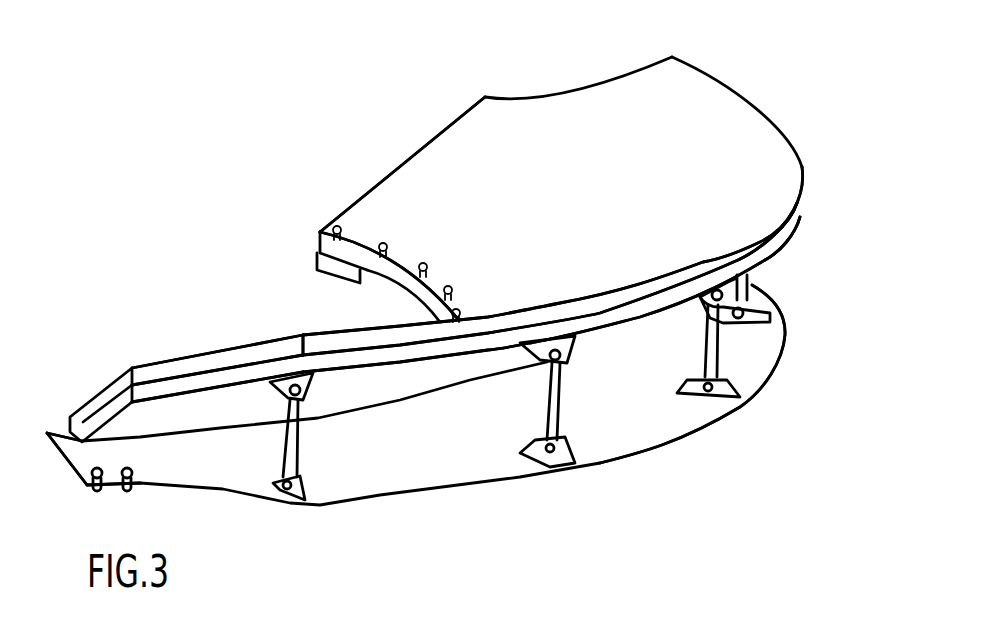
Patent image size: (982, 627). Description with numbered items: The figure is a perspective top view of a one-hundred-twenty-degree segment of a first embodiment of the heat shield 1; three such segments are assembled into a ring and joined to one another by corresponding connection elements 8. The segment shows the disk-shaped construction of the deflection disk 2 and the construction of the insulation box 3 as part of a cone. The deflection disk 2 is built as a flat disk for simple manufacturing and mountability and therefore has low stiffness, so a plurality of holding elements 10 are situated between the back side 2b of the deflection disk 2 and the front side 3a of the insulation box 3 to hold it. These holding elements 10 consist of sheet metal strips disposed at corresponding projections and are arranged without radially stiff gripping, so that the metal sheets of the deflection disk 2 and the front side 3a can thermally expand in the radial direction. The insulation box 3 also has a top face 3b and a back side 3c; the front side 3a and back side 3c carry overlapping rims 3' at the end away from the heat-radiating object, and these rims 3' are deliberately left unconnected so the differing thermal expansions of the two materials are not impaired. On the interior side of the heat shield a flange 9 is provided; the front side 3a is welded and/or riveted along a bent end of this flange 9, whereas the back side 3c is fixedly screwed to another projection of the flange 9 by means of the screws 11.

The apparatus / cutting-edge arrangement 1 is at (760, 78).
The deflection disk 2 is at (433, 497).
The back side of the deflection disk 2b is at (630, 443).
The insulation box 3 is at (436, 263).
The front side of the insulation box 3a is at (228, 383).
The top face of support member 3b is at (195, 368).
The back side of the insulation box 3c is at (553, 118).
The overlapping rims 3' is at (802, 220).
The connection elements 8 is at (55, 432).
The flange 9 is at (308, 238).
The holding elements 10 is at (290, 507).
The screws 11 is at (450, 312).